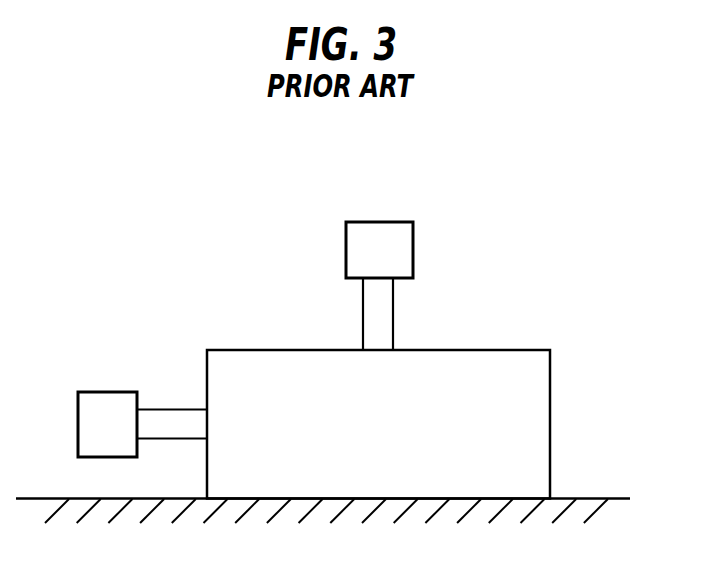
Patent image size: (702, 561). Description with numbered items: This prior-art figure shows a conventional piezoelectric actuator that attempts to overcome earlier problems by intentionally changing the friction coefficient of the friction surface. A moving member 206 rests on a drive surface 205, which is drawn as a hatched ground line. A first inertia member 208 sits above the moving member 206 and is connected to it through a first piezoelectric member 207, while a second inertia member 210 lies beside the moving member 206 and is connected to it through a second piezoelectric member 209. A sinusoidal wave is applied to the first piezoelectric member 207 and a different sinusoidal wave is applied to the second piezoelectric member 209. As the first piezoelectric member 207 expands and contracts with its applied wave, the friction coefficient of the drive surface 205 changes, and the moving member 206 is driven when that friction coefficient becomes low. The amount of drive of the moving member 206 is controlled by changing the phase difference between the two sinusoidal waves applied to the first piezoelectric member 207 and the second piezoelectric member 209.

The drive surface 205 is at (577, 498).
The moving member 206 is at (523, 422).
The first piezoelectric member 207 is at (370, 317).
The first inertia member 208 is at (362, 248).
The second piezoelectric member 209 is at (165, 423).
The second inertia member 210 is at (104, 413).